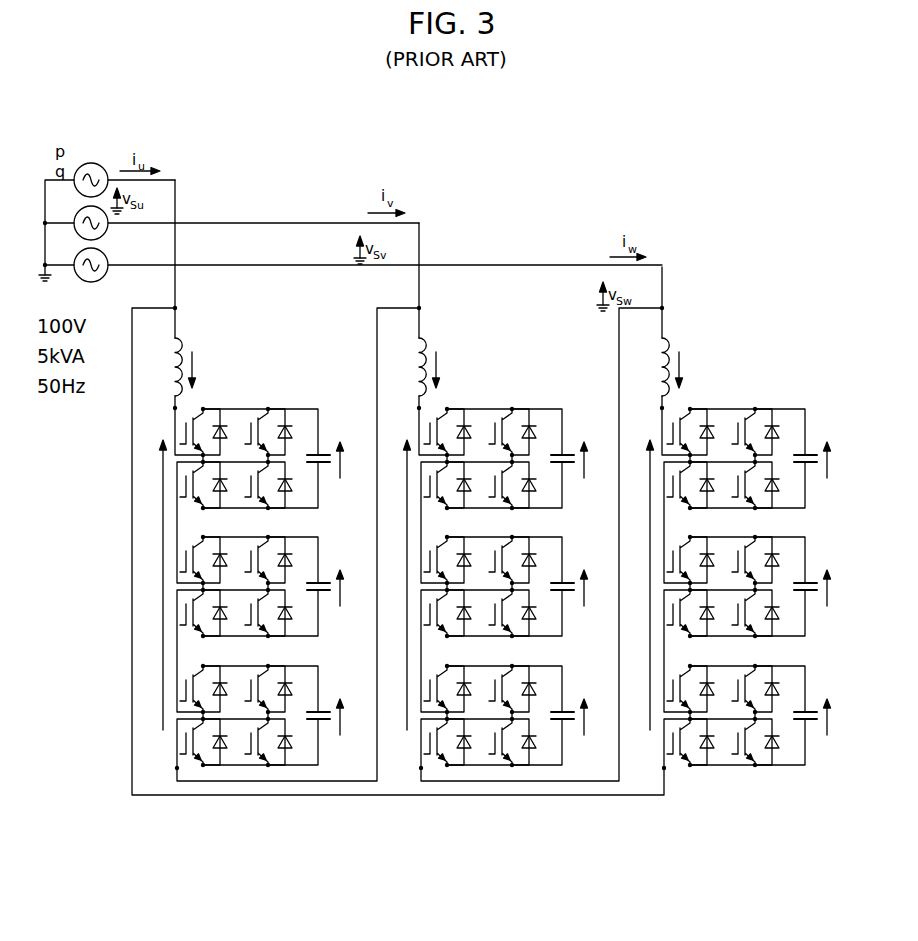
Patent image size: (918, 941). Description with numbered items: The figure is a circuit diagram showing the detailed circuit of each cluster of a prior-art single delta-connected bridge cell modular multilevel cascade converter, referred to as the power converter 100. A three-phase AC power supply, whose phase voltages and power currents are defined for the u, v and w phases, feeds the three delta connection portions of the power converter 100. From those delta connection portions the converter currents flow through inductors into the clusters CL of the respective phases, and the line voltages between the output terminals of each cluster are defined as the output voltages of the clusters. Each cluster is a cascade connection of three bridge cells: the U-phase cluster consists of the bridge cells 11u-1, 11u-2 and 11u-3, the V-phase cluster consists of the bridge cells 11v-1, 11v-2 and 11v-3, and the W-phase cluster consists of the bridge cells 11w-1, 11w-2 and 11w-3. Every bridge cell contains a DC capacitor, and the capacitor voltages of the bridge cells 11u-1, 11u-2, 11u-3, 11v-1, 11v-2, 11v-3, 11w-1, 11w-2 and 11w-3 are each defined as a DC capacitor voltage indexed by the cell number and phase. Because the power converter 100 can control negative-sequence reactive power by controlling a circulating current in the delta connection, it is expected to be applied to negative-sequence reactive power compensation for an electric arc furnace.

The power converter 100 is at (446, 838).
The bridge cell 11u-1 is at (274, 389).
The bridge cell 11u-2 is at (300, 529).
The bridge cell 11u-3 is at (300, 659).
The bridge cell 11v-1 is at (518, 389).
The bridge cell 11v-2 is at (544, 529).
The bridge cell 11v-3 is at (544, 659).
The bridge cell 11w-1 is at (761, 389).
The bridge cell 11w-2 is at (787, 529).
The bridge cell 11w-3 is at (787, 659).